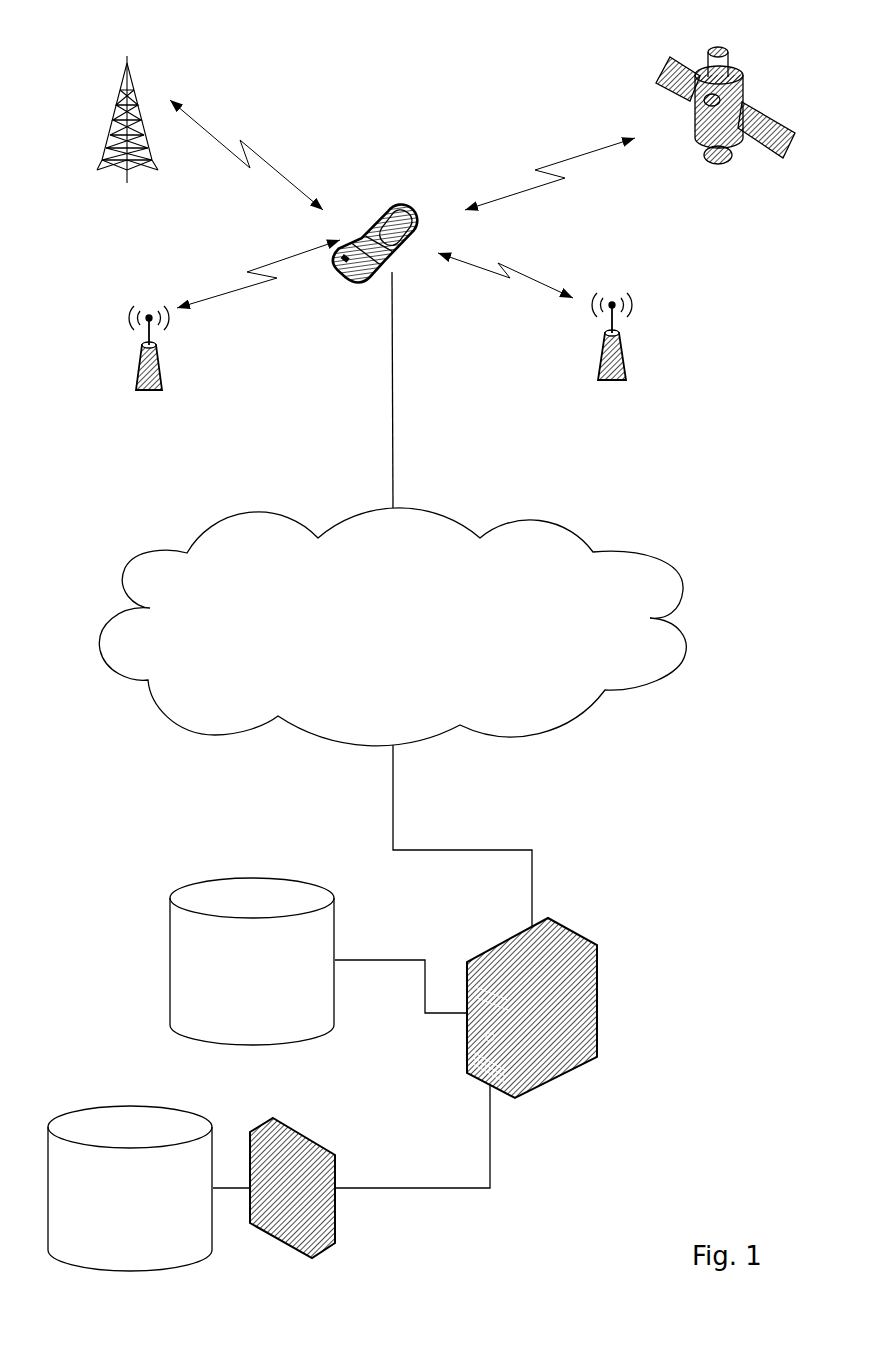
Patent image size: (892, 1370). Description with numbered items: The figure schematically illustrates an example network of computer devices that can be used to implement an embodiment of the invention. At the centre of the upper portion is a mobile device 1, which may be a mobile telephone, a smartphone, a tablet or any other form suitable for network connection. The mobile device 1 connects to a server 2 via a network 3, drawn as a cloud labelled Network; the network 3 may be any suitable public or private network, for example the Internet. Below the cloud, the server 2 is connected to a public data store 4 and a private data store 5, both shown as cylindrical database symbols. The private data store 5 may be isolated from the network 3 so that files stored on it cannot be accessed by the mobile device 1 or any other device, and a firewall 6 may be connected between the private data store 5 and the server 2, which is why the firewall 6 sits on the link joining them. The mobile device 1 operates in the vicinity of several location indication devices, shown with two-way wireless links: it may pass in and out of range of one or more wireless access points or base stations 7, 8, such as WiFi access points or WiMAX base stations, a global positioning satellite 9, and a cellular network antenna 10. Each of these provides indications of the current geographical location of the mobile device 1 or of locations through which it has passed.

The mobile device 1 is at (393, 204).
The server 2 is at (602, 1017).
The network 3 is at (587, 537).
The public data store 4 is at (252, 877).
The private data store 5 is at (132, 1105).
The firewall 6 is at (337, 1237).
The wireless access point or base station 7 is at (158, 345).
The wireless access point or base station 8 is at (615, 333).
The global positioning satellite 9 is at (696, 110).
The cellular network antenna 10 is at (135, 88).